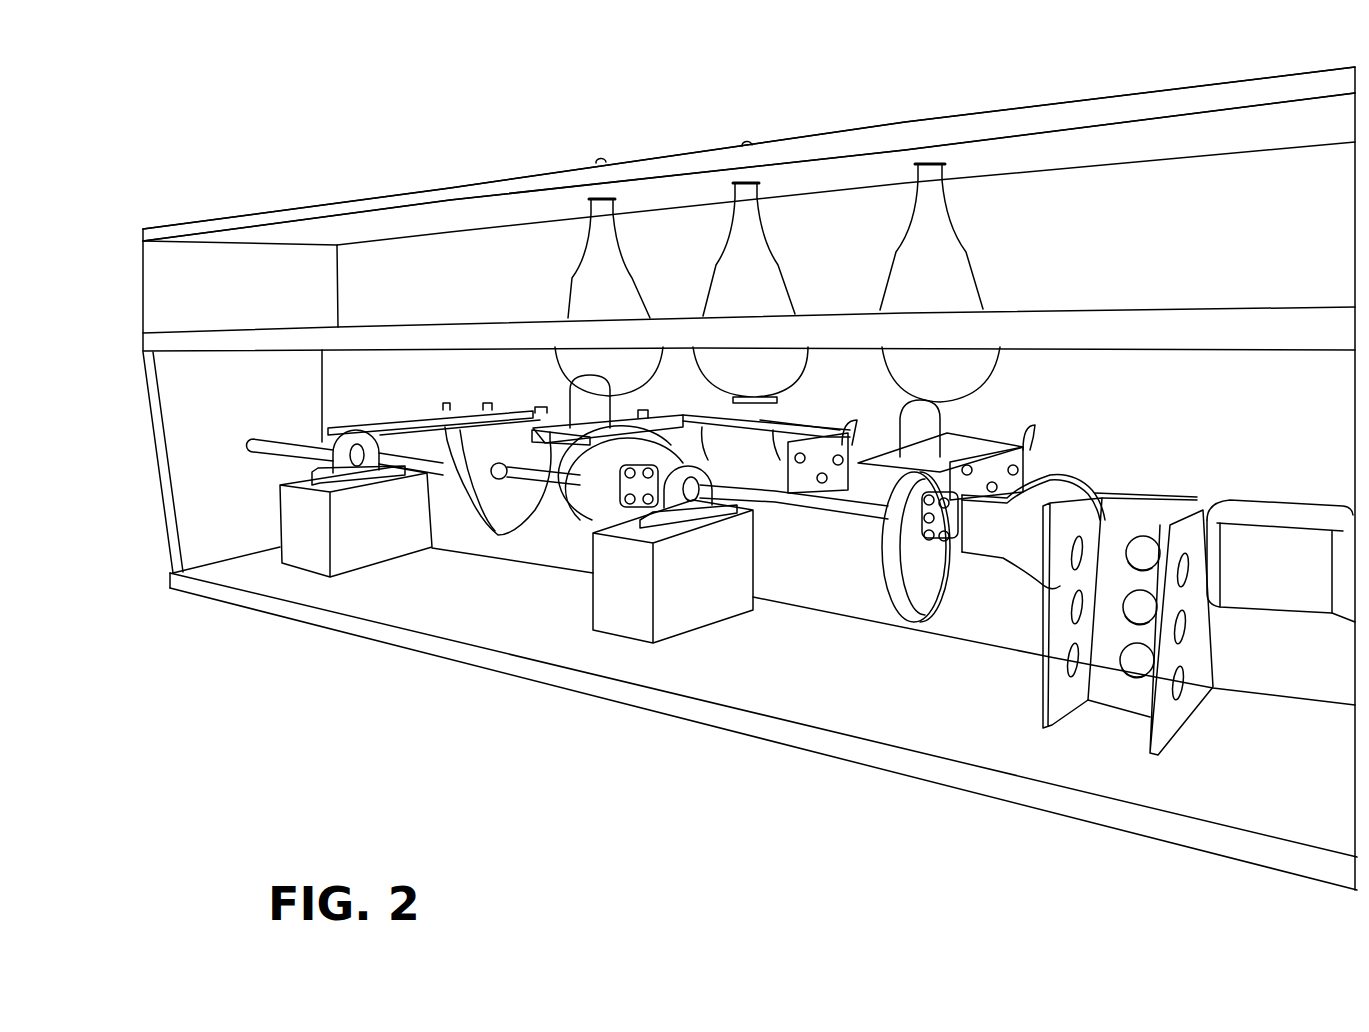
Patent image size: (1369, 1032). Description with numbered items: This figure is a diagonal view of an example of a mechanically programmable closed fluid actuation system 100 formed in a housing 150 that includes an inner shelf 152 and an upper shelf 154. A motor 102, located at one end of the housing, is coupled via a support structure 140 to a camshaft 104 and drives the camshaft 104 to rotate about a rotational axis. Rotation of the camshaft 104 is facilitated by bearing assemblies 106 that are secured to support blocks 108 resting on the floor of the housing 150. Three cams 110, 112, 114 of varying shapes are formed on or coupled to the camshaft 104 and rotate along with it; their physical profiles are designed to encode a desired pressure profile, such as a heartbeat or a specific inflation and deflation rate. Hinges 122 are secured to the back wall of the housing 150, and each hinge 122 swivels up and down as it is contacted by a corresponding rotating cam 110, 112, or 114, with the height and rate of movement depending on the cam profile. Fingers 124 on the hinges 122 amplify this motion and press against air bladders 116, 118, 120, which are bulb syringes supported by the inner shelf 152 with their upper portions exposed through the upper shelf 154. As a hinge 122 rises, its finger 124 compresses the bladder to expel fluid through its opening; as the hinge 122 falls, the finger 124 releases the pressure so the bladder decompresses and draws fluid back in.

The mechanically programmable closed fluid actuation system 100 is at (112, 130).
The motor 102 is at (1279, 595).
The camshaft 104 is at (834, 508).
The bearing assemblies 106 is at (335, 443).
The support blocks 108 is at (357, 530).
The cam 110 is at (494, 522).
The cam 112 is at (600, 497).
The cam 114 is at (930, 600).
The first air bladder 116 is at (592, 260).
The second air bladder 118 is at (736, 247).
The third air bladder 120 is at (944, 240).
The hinges 122 is at (810, 425).
The fingers 124 is at (573, 393).
The support structure 140 is at (1170, 718).
The housing 150 is at (982, 777).
The inner shelf 152 is at (1185, 333).
The upper shelf 154 is at (1110, 108).